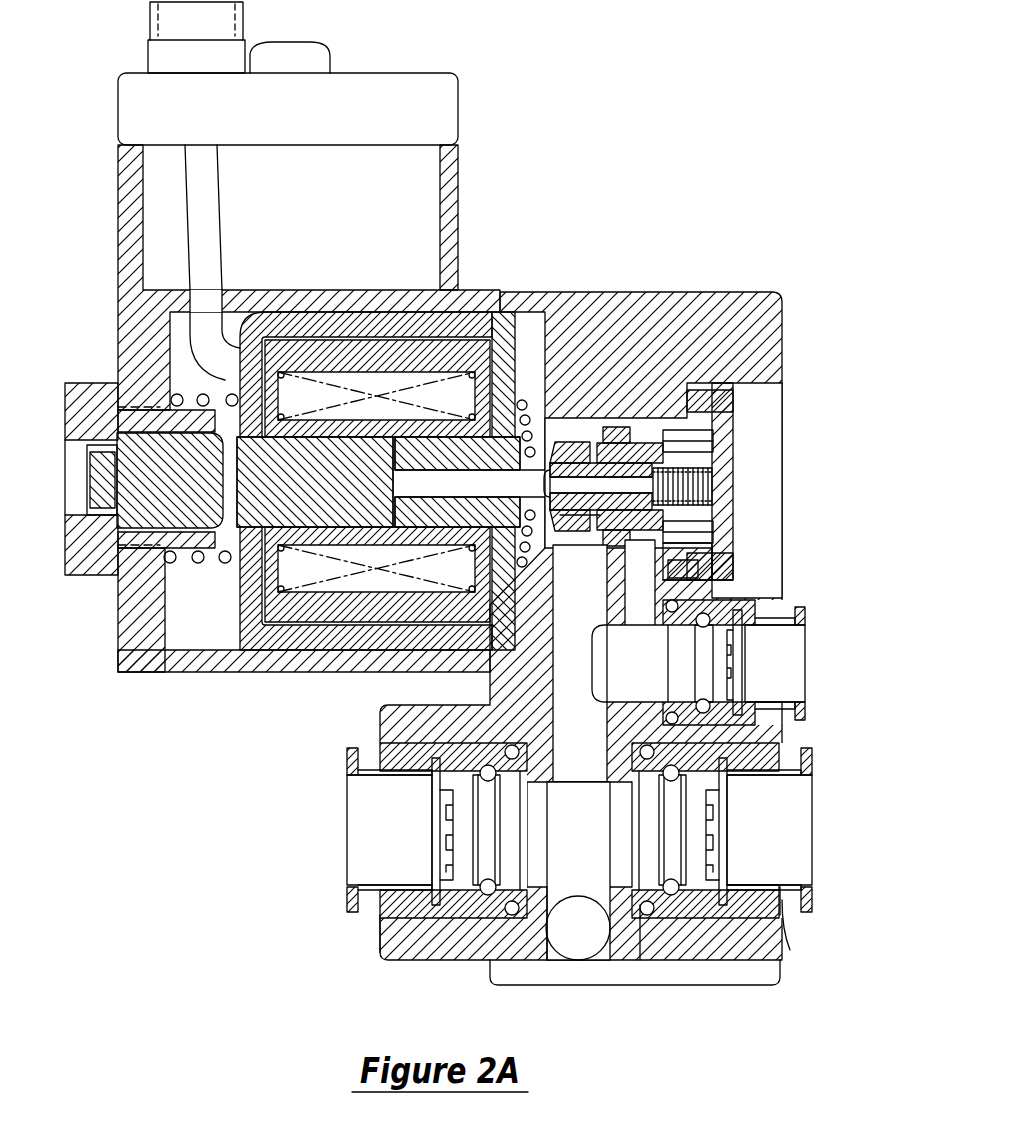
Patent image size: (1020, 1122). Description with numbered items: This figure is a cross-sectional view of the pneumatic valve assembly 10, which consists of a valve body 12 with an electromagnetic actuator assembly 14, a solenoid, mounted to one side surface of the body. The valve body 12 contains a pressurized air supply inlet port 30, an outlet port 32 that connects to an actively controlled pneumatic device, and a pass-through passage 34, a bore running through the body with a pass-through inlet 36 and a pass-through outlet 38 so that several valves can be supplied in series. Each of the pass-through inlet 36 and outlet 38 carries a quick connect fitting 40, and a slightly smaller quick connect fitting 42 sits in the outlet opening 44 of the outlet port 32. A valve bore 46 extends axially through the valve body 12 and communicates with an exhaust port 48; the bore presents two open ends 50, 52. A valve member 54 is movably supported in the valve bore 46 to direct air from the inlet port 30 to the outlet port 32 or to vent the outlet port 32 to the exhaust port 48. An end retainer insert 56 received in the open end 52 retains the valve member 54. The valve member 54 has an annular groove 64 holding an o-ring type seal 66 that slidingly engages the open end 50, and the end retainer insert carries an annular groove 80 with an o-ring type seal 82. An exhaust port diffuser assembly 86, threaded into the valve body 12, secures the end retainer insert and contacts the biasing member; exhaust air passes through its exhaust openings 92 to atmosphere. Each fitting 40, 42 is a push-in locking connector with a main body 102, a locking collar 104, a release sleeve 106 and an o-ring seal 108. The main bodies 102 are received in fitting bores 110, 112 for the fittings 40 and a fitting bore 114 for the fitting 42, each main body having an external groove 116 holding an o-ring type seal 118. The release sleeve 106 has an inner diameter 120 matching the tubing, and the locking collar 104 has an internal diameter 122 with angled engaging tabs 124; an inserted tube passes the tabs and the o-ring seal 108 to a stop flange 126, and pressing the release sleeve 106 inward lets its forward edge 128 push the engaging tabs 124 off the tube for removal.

The pneumatic valve assembly 10 is at (632, 242).
The valve body 12 is at (745, 292).
The actuator assembly 14 is at (118, 608).
The inlet port 30 is at (596, 760).
The outlet port 32 is at (640, 586).
The pass-through passage 34 is at (594, 816).
The pass-through inlet 36 is at (784, 811).
The pass-through outlet 38 is at (344, 768).
The quick connect fitting 40 is at (573, 830).
The quick connect fitting 42 is at (776, 657).
The outlet opening 44 is at (786, 675).
The valve bore 46 is at (600, 450).
The exhaust port 48 is at (676, 388).
The open end 50 is at (532, 495).
The open end 52 is at (655, 438).
The valve member 54 is at (583, 520).
The end retainer insert 56 is at (632, 448).
The annular groove 64 is at (542, 455).
The o-ring type seal 66 is at (566, 460).
The annular groove 80 is at (730, 560).
The o-ring type seal 82 is at (700, 592).
The exhaust port diffuser assembly 86 is at (752, 478).
The exhaust openings 92 is at (745, 545).
The main body 102 is at (705, 918).
The locking collar 104 is at (722, 866).
The release sleeve 106 is at (812, 790).
The o-ring seal 108 is at (720, 820).
The fitting bore 110 is at (788, 930).
The fitting bore 112 is at (378, 916).
The fitting bore 114 is at (782, 720).
The groove 116 is at (640, 928).
The o-ring type seal 118 is at (656, 912).
The inner diameter 120 is at (780, 900).
The internal diameter 122 is at (723, 818).
The engaging tabs 124 is at (712, 855).
The stop flange 126 is at (708, 862).
The forward edge 128 is at (762, 892).